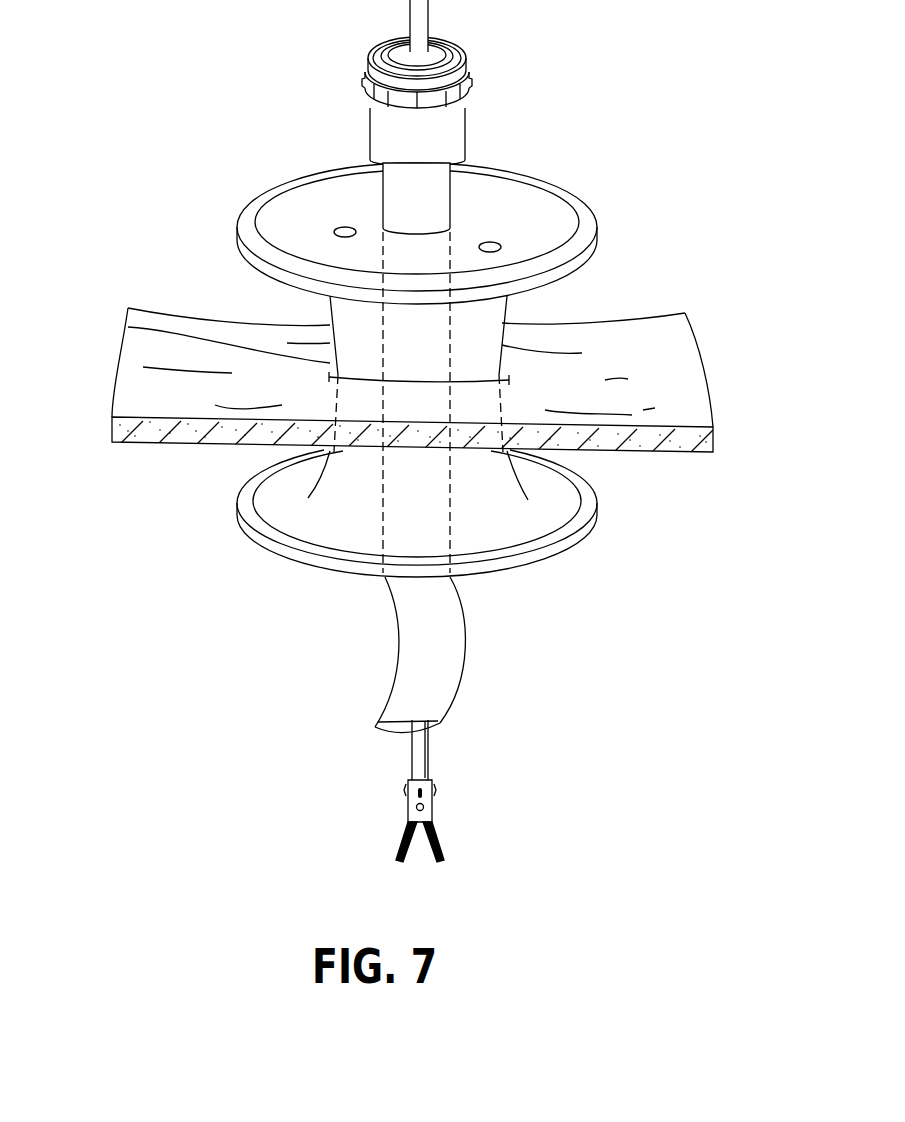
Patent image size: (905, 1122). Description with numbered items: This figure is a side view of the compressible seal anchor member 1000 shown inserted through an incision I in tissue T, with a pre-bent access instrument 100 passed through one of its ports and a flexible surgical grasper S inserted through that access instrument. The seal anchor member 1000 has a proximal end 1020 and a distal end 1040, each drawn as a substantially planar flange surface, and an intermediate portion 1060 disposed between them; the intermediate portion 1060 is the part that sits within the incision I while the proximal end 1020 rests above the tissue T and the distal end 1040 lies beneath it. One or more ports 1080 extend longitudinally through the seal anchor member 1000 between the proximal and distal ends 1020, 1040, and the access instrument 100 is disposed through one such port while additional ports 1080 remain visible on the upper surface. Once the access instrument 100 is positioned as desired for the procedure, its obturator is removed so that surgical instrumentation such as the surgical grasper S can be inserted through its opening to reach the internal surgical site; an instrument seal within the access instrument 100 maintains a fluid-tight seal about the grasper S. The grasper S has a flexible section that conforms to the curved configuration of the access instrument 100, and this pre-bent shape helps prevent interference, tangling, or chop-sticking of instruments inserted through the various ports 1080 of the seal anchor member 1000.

The access instrument 100 is at (494, 56).
The seal anchor member 1000 is at (364, 433).
The proximal end 1020 is at (588, 221).
The distal end 1040 is at (588, 505).
The intermediate portion 1060 is at (128, 327).
The ports 1080 is at (337, 231).
The incision I is at (505, 380).
The tissue T is at (673, 347).
The surgical grasper S is at (430, 760).